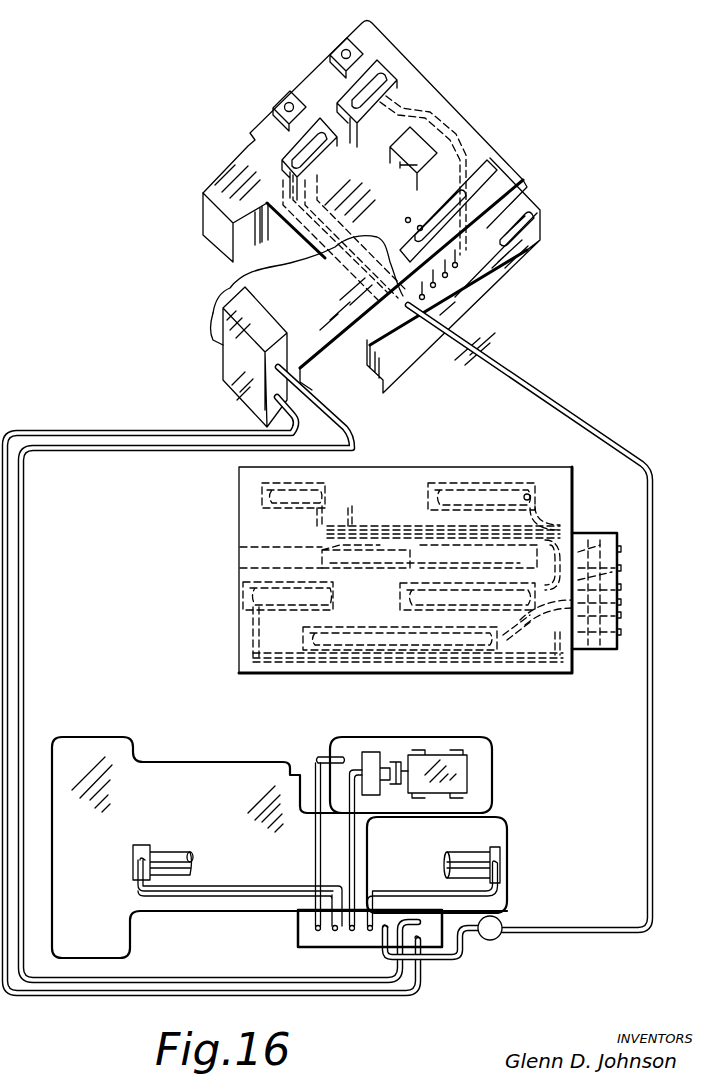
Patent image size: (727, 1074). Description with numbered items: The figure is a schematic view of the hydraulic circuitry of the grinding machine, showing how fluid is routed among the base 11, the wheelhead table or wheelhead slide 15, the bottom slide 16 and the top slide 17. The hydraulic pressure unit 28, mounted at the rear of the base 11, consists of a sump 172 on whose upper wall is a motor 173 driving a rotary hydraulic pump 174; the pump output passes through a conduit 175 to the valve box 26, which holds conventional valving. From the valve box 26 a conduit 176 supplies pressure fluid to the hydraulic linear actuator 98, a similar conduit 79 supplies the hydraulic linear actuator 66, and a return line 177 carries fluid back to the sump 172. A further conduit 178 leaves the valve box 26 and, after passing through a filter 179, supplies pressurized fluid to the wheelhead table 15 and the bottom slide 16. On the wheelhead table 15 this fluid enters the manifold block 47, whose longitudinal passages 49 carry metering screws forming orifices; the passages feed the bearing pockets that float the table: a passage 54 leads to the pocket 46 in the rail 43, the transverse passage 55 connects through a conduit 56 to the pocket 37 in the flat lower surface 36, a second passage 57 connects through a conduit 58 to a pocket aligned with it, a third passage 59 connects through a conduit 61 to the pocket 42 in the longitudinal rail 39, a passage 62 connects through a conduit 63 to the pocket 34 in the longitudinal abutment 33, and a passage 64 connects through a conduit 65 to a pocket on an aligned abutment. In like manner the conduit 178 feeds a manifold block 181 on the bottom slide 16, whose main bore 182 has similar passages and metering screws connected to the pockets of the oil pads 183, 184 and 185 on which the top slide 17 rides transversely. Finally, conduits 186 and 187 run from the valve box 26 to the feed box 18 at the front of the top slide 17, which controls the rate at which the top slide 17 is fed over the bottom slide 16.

The base 11 is at (100, 749).
The wheelhead table 15 is at (245, 518).
The bottom slide 16 is at (203, 220).
The top slide 17 is at (322, 366).
The feed box 18 is at (222, 344).
The valve box 26 is at (337, 936).
The hydraulic pressure unit 28 is at (485, 759).
The longitudinal abutment 33 is at (463, 483).
The shallow pocket 34 is at (490, 487).
The flat horizontal surface 36 is at (403, 605).
The shallow pocket 37 is at (400, 588).
The longitudinal rail 39 is at (420, 563).
The shallow pocket 42 is at (420, 555).
The rail 43 is at (312, 645).
The shallow pocket 46 is at (400, 640).
The manifold block 47 is at (602, 535).
The longitudinal passage 49 is at (622, 574).
The passage 54 is at (503, 660).
The transverse passage 55 is at (618, 636).
The conduit 56 is at (555, 655).
The passage 57 is at (620, 614).
The conduit 58 is at (363, 650).
The passage 59 is at (625, 608).
The conduit 61 is at (625, 590).
The passage 62 is at (622, 567).
The conduit 63 is at (535, 505).
The passage 64 is at (607, 546).
The conduit 65 is at (348, 524).
The hydraulic linear actuator 66 is at (463, 852).
The conduit 79 is at (505, 893).
The hydraulic linear actuator 98 is at (176, 851).
The sump 172 is at (330, 752).
The motor 173 is at (463, 777).
The rotary hydraulic pump 174 is at (371, 752).
The conduit 175 is at (356, 851).
The conduit 176 is at (217, 898).
The return line 177 is at (314, 851).
The conduit 178 is at (655, 817).
The filter 179 is at (495, 941).
The manifold block 181 is at (452, 296).
The main bore 182 is at (463, 272).
The oil pad 183 is at (281, 162).
The oil pad 184 is at (382, 73).
The oil pad 185 is at (475, 180).
The conduit 186 is at (24, 683).
The conduit 187 is at (9, 650).